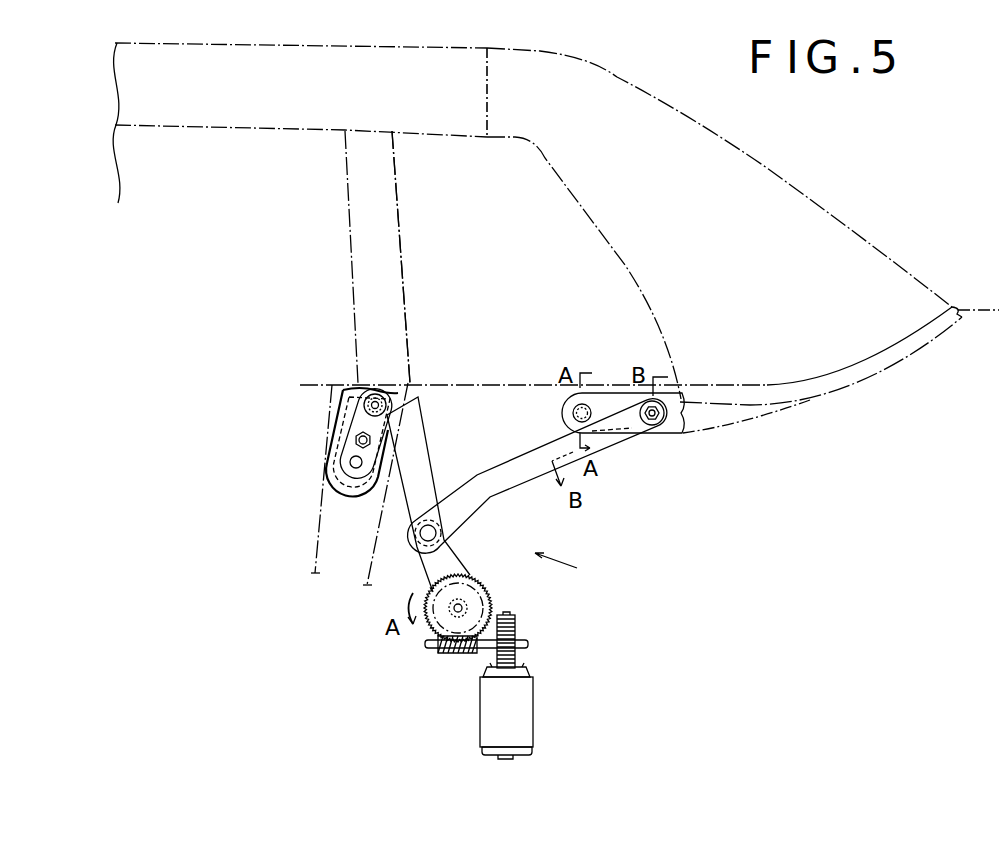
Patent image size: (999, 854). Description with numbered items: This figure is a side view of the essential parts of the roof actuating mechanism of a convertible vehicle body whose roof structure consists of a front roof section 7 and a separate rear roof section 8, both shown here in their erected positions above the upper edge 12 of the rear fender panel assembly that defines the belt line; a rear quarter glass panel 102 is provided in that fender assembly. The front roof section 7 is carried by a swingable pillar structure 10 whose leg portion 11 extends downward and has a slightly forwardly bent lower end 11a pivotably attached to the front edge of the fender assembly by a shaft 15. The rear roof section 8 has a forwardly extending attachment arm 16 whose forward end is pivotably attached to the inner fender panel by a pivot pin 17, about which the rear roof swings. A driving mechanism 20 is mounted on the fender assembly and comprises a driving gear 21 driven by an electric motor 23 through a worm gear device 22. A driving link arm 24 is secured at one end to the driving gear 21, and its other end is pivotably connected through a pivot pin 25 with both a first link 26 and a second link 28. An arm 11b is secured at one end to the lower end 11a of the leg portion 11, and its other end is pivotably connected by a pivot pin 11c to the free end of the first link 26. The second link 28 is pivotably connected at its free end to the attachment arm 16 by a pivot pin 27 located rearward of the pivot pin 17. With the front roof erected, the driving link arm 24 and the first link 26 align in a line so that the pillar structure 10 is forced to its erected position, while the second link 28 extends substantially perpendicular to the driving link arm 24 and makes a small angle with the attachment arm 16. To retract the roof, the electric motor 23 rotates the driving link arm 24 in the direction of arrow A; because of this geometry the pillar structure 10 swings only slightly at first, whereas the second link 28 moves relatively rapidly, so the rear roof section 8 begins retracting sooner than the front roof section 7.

The front roof section 7 is at (455, 48).
The rear roof section 8 is at (845, 222).
The rear quarter glass panel 102 is at (593, 217).
The pillar structure 10 is at (410, 327).
The leg portion 11 is at (403, 283).
The lower end 11a is at (342, 392).
The arm 11b is at (330, 425).
The pivot pin 11c is at (375, 394).
The upper edge 12 is at (498, 383).
The shaft 15 is at (355, 470).
The attachment arm 16 is at (658, 437).
The pivot pin 17 is at (594, 374).
The driving mechanism 20 is at (574, 569).
The driving gear 21 is at (496, 590).
The worm gear device 22 is at (529, 631).
The electric motor 23 is at (533, 711).
The driving link arm 24 is at (466, 595).
The pivot pin 25 is at (420, 537).
The first link 26 is at (423, 477).
The pivot pin 27 is at (666, 396).
The second link 28 is at (543, 482).